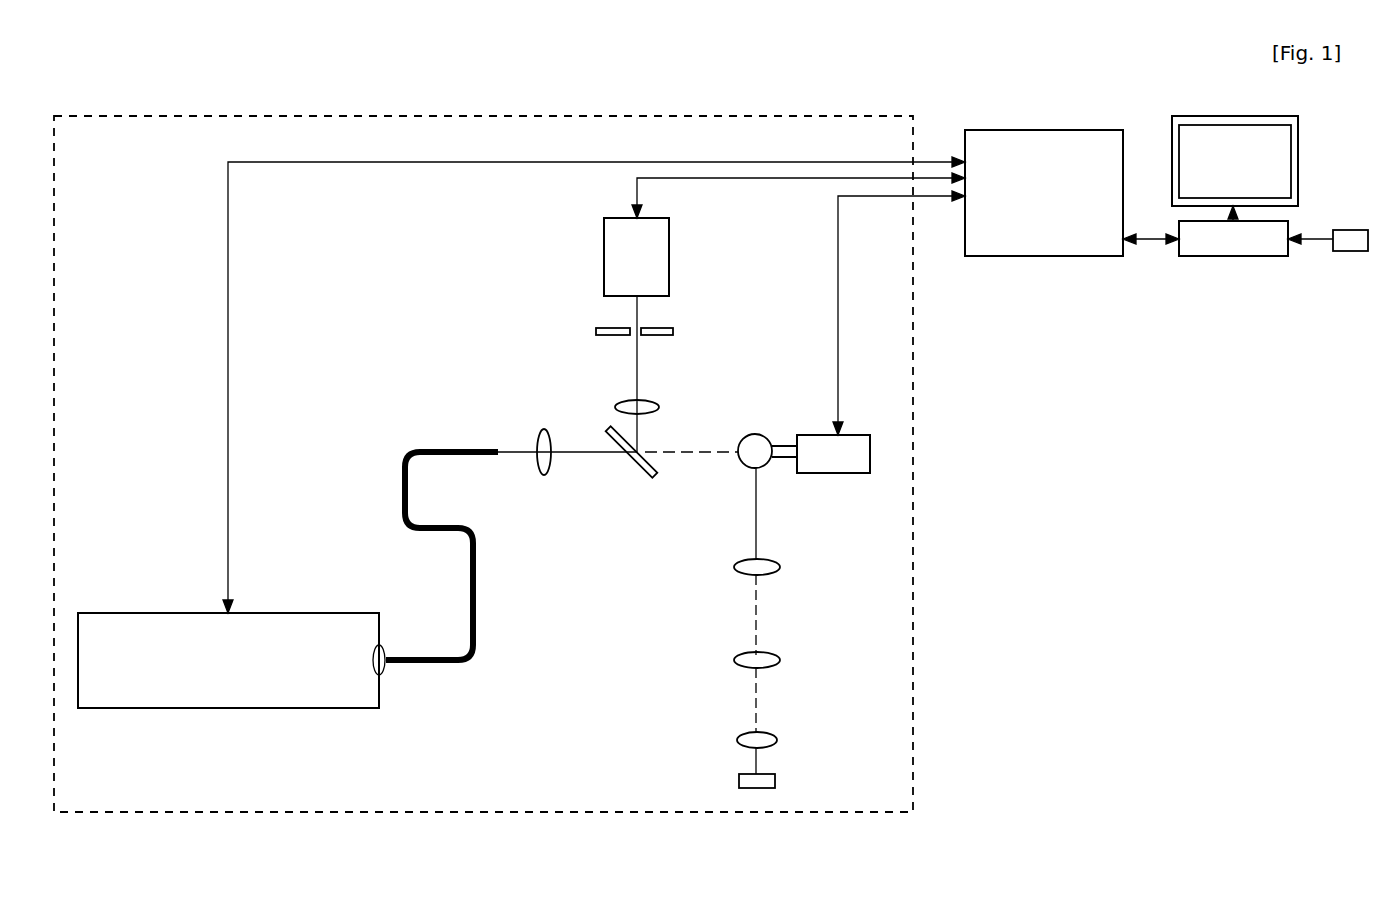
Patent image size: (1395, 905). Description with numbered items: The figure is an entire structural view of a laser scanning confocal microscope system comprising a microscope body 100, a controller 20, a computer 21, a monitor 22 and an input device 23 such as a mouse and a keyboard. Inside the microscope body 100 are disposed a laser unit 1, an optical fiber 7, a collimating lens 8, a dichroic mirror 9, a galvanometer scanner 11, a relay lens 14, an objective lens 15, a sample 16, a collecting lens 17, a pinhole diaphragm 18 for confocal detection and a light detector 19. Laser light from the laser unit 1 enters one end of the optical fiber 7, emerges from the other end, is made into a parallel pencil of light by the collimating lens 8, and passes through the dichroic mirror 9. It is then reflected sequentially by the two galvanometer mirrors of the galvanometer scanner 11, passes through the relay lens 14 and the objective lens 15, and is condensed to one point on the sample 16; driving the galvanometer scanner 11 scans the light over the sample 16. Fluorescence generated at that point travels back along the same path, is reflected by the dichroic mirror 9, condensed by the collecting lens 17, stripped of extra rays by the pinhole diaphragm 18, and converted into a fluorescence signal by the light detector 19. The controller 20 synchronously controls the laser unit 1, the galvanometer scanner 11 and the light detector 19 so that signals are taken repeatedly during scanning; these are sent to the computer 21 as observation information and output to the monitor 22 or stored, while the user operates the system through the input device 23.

The microscope body 100 is at (737, 117).
The laser unit 1 is at (138, 613).
The optical fiber 7 is at (473, 607).
The collimating lens 8 is at (542, 428).
The dichroic mirror 9 is at (630, 465).
The galvanometer scanner 11 is at (745, 413).
The relay lens 14 is at (730, 553).
The objective lens 15 is at (737, 740).
The sample 16 is at (775, 776).
The collecting lens 17 is at (617, 402).
The pinhole diaphragm for confocal detection 18 is at (598, 330).
The light detector 19 is at (604, 250).
The controller 20 is at (1070, 130).
The computer 21 is at (1232, 256).
The monitor 22 is at (1298, 177).
The input device 23 is at (1352, 230).